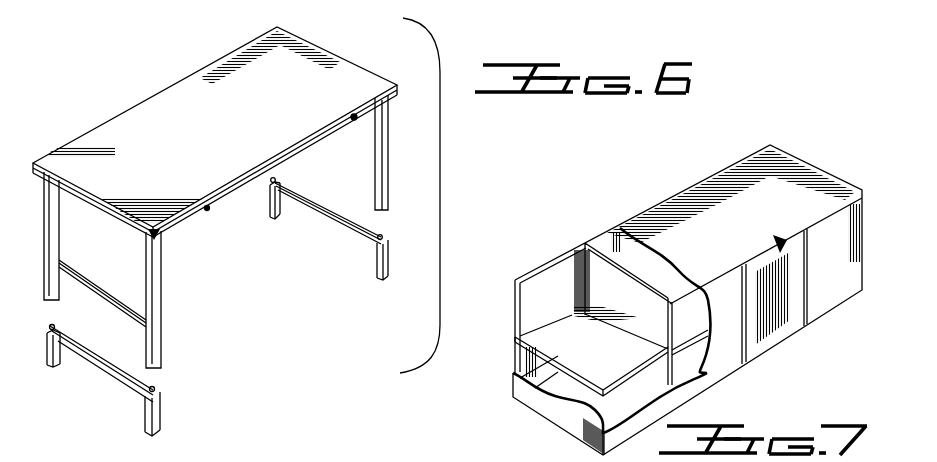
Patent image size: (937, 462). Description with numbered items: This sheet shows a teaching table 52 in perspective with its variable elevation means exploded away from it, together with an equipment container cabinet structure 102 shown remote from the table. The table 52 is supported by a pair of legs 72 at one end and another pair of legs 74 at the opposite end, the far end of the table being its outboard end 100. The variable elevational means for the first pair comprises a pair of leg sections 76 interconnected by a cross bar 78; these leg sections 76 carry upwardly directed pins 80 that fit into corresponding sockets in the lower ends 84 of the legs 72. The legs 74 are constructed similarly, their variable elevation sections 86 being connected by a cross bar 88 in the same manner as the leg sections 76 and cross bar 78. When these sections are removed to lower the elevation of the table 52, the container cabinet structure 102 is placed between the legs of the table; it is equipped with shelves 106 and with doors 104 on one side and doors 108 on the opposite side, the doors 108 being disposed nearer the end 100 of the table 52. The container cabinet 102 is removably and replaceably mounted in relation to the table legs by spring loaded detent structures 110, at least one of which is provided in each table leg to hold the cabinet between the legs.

In FIG. 6, the table 52 is at (218, 140).
In FIG. 6, the legs 72 is at (45, 251).
In FIG. 6, the legs 74 is at (376, 193).
In FIG. 6, the leg sections 76 is at (60, 362).
In FIG. 6, the cross bar 78 is at (100, 380).
In FIG. 6, the pins 80 is at (57, 329).
In FIG. 6, the lower ends 84 is at (46, 298).
In FIG. 6, the variable elevation sections 86 is at (273, 218).
In FIG. 6, the cross bar 88 is at (318, 218).
In FIG. 6, the outboard end 100 is at (104, 198).
In FIG. 6, the spring loaded detent structures 110 is at (207, 207).
In FIG. 7, the equipment container cabinet structure 102 is at (698, 179).
In FIG. 7, the doors 104 is at (780, 340).
In FIG. 7, the shelves 106 is at (540, 336).
In FIG. 7, the doors 108 is at (603, 233).